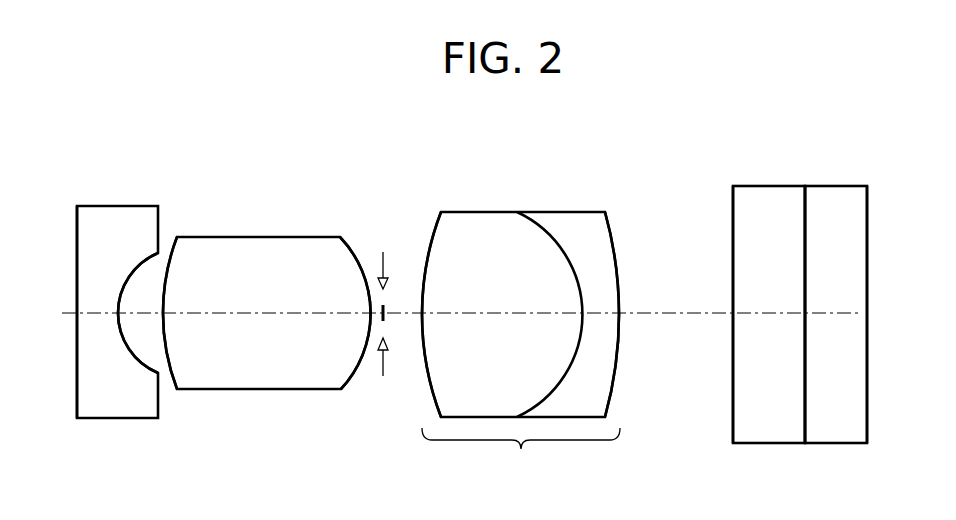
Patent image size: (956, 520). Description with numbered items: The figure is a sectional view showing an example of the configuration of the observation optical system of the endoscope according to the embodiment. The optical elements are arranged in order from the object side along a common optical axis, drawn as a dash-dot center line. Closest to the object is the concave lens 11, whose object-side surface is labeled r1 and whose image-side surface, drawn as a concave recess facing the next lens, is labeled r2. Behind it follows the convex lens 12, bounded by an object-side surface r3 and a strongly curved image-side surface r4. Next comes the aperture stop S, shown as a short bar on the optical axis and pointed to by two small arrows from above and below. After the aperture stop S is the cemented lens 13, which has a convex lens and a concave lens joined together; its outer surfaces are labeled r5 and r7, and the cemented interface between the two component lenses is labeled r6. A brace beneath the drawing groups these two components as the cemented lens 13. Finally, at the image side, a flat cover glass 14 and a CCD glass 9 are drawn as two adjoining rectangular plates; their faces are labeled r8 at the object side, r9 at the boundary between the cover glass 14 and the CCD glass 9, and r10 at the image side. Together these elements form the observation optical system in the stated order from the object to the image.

The concave lens 11 is at (118, 403).
The convex lens 12 is at (270, 365).
The cemented lens 13 is at (521, 347).
The cover glass 14 is at (771, 427).
The CCD glass 9 is at (840, 425).
The aperture stop S is at (383, 376).
The first surface r1 is at (78, 227).
The second surface r2 is at (143, 272).
The third surface r3 is at (167, 262).
The fourth surface r4 is at (361, 246).
The fifth surface r5 is at (434, 242).
The sixth surface (cemented surface) r6 is at (562, 242).
The seventh surface r7 is at (615, 238).
The eighth surface r8 is at (733, 210).
The ninth surface r9 is at (805, 205).
The tenth surface r10 is at (867, 205).